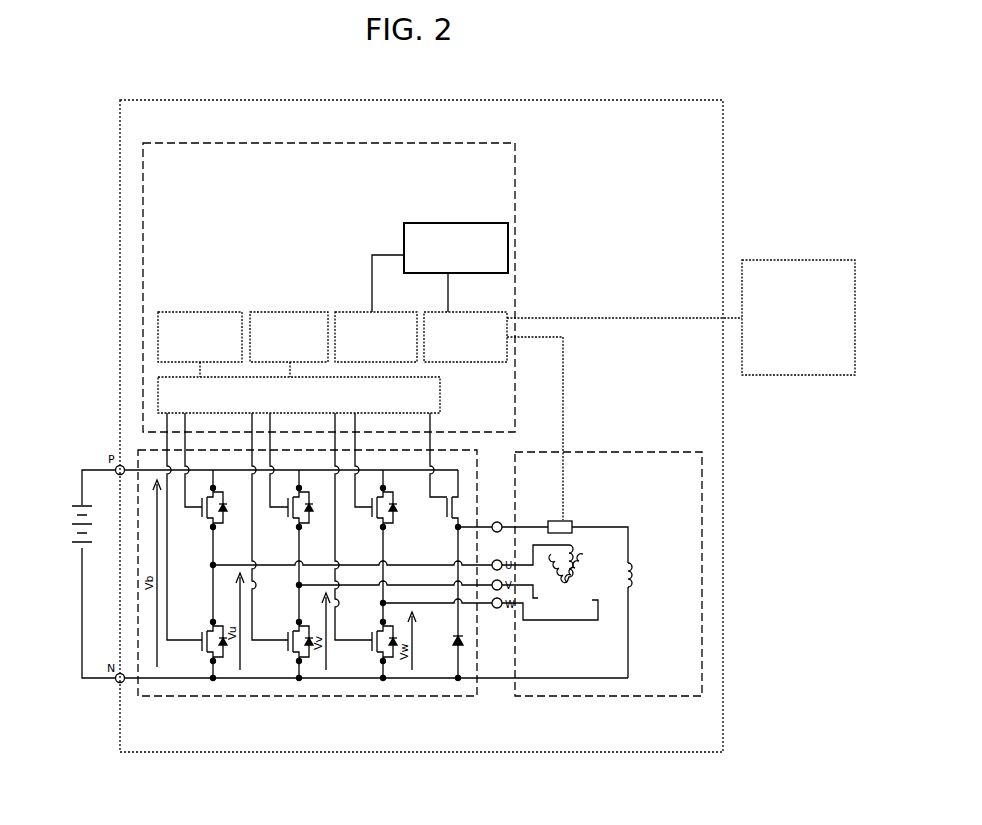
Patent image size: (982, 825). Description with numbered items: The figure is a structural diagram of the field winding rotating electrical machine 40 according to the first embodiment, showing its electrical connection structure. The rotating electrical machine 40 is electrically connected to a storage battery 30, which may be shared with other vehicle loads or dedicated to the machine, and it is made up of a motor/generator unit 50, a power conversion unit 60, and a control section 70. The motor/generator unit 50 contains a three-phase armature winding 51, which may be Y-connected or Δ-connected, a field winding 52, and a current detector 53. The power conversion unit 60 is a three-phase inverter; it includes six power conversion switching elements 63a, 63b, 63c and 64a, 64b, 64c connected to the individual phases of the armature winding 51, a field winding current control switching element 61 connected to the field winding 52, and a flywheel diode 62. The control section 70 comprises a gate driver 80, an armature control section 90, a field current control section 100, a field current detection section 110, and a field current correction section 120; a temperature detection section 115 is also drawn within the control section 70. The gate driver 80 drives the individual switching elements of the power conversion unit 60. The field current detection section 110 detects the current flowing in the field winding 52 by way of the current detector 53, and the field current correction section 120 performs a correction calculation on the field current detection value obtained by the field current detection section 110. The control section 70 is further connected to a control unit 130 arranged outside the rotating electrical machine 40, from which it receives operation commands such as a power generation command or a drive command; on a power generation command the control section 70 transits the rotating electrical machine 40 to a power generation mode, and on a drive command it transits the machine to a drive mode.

The storage battery 30 is at (72, 527).
The rotating electrical machine 40 is at (390, 100).
The motor/generator unit 50 is at (615, 452).
The armature winding 51 is at (580, 572).
The field winding 52 is at (633, 572).
The current detector 53 is at (578, 518).
The power conversion unit 60 is at (305, 697).
The field winding current control switching element 61 is at (449, 508).
The flywheel diode 62 is at (455, 649).
The power conversion switching element 63a is at (204, 518).
The power conversion switching element 63b is at (290, 518).
The power conversion switching element 63c is at (374, 518).
The power conversion switching element 64a is at (204, 649).
The power conversion switching element 64b is at (290, 649).
The power conversion switching element 64c is at (374, 649).
The control section 70 is at (313, 143).
The gate driver 80 is at (440, 398).
The armature control section 90 is at (208, 312).
The field current control section 100 is at (300, 312).
The field current detection section 110 is at (460, 312).
The temperature detection section 115 is at (404, 252).
The field current correction section 120 is at (385, 312).
The control unit 130 is at (800, 260).